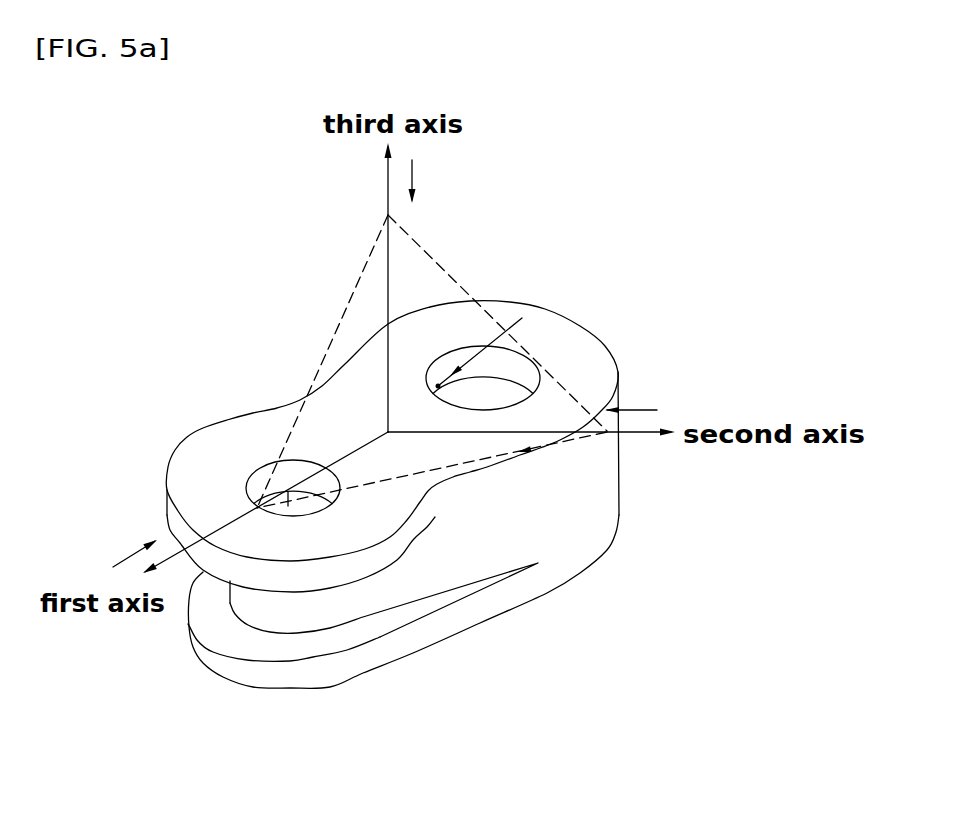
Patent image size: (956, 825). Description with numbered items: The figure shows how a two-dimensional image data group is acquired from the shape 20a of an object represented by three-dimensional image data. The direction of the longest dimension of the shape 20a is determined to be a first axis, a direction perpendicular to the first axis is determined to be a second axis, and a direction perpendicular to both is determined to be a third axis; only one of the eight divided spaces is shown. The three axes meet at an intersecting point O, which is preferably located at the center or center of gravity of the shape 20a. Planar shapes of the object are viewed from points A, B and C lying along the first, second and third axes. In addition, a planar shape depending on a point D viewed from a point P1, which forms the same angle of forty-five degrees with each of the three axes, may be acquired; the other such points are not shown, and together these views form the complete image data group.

The shape of the object 20a is at (605, 331).
The intersecting point O is at (376, 423).
The viewing point A is at (135, 549).
The viewing point B is at (631, 397).
The viewing point C is at (422, 181).
The point D is at (486, 348).
The point P1 is at (424, 364).